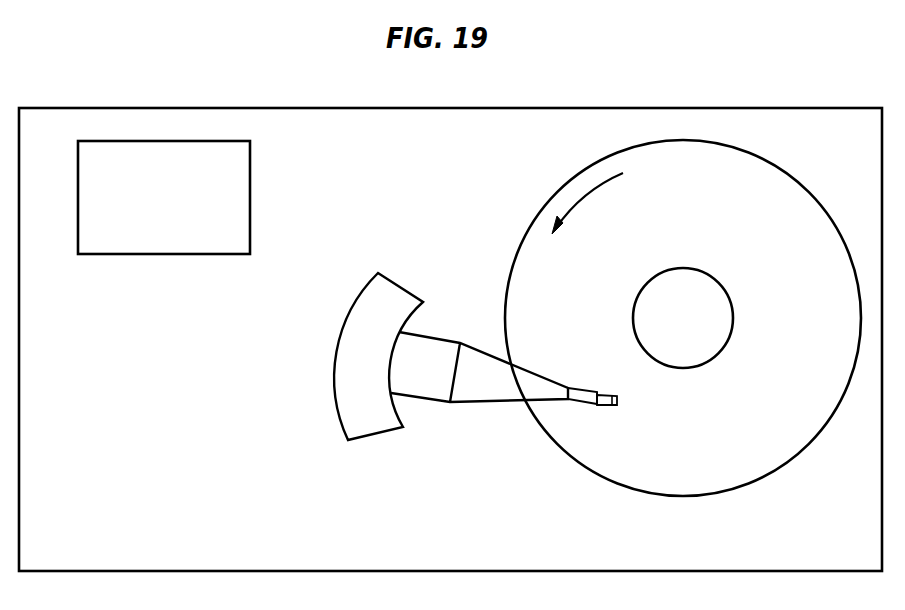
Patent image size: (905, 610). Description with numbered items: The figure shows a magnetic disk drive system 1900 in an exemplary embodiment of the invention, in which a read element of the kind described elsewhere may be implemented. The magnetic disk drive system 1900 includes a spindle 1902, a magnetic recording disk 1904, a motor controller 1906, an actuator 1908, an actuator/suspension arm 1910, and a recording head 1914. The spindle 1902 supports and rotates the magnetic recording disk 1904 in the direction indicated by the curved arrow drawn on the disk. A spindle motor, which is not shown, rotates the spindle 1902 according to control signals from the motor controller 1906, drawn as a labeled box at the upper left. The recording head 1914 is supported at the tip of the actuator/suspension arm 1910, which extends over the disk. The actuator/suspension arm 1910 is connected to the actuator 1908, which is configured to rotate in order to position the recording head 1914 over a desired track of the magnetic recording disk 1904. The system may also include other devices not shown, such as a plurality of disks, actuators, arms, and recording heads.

The magnetic disk drive system 1900 is at (418, 552).
The spindle 1902 is at (733, 318).
The magnetic recording disk 1904 is at (730, 211).
The motor controller 1906 is at (140, 237).
The actuator 1908 is at (403, 273).
The actuator/suspension arm 1910 is at (463, 403).
The recording head 1914 is at (622, 403).